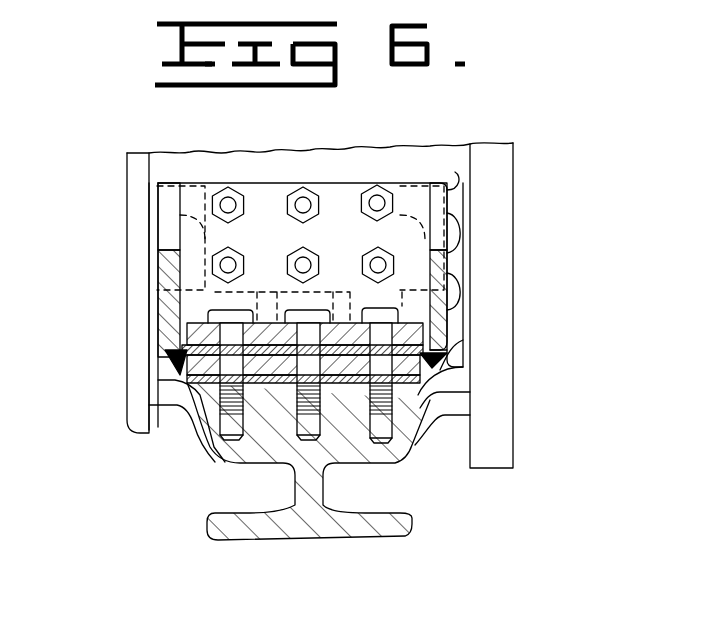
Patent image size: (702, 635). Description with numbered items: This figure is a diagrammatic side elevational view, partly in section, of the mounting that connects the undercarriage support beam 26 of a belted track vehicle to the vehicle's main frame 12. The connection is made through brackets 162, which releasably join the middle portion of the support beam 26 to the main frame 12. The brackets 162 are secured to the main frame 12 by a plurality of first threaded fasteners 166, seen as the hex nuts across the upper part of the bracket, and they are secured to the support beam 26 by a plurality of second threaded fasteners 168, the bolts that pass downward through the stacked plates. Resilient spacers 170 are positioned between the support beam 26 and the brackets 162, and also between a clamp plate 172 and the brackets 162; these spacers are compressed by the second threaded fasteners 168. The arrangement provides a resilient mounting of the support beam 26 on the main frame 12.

The main frame 12 is at (503, 173).
The first bracket 162 is at (338, 192).
The first threaded fasteners 166 is at (225, 206).
The second threaded fasteners 168 is at (206, 313).
The resilient spacers 170 is at (160, 405).
The clamp plate 172 is at (172, 345).
The support beam 26 is at (363, 535).